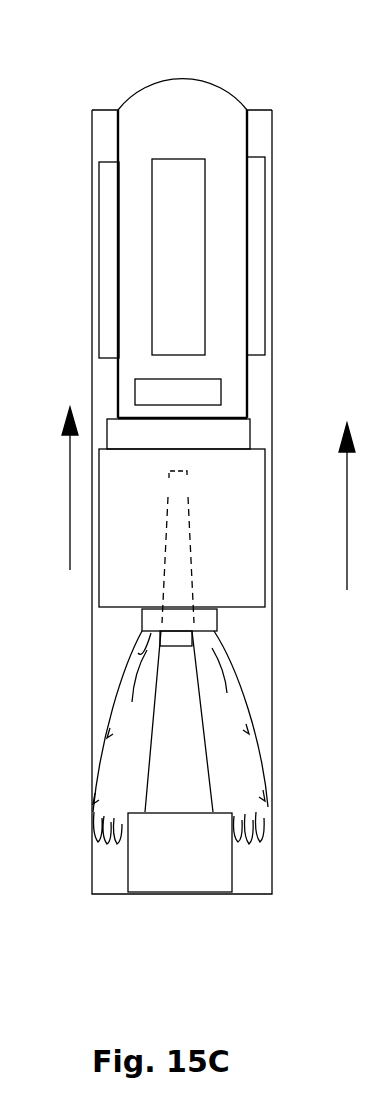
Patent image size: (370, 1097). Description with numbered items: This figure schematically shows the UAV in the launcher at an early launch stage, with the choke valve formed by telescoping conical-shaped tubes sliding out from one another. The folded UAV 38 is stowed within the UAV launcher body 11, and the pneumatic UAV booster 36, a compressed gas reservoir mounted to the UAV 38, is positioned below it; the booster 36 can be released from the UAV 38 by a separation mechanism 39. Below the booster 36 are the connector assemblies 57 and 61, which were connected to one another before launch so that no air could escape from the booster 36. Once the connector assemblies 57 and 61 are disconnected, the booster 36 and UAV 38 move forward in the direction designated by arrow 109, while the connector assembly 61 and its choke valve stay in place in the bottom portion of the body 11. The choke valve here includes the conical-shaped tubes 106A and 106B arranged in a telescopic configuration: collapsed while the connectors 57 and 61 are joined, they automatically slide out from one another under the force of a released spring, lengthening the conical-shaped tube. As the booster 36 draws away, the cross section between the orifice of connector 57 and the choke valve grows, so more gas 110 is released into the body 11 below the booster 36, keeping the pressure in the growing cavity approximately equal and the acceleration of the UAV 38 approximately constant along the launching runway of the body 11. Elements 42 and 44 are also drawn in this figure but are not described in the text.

The UAV launcher body 11 is at (87, 720).
The folded UAV 38 is at (172, 110).
The side channel 42 is at (103, 243).
The plate 44 is at (221, 389).
The separation mechanism 39 is at (108, 418).
The pneumatic UAV booster 36 is at (248, 587).
The conical-shaped tube 106B is at (191, 558).
The connector assembly 57 is at (138, 617).
The conical-shaped tube 106A is at (188, 778).
The gas 110 is at (121, 822).
The connector assembly 61 is at (175, 860).
The arrow 109 is at (68, 507).